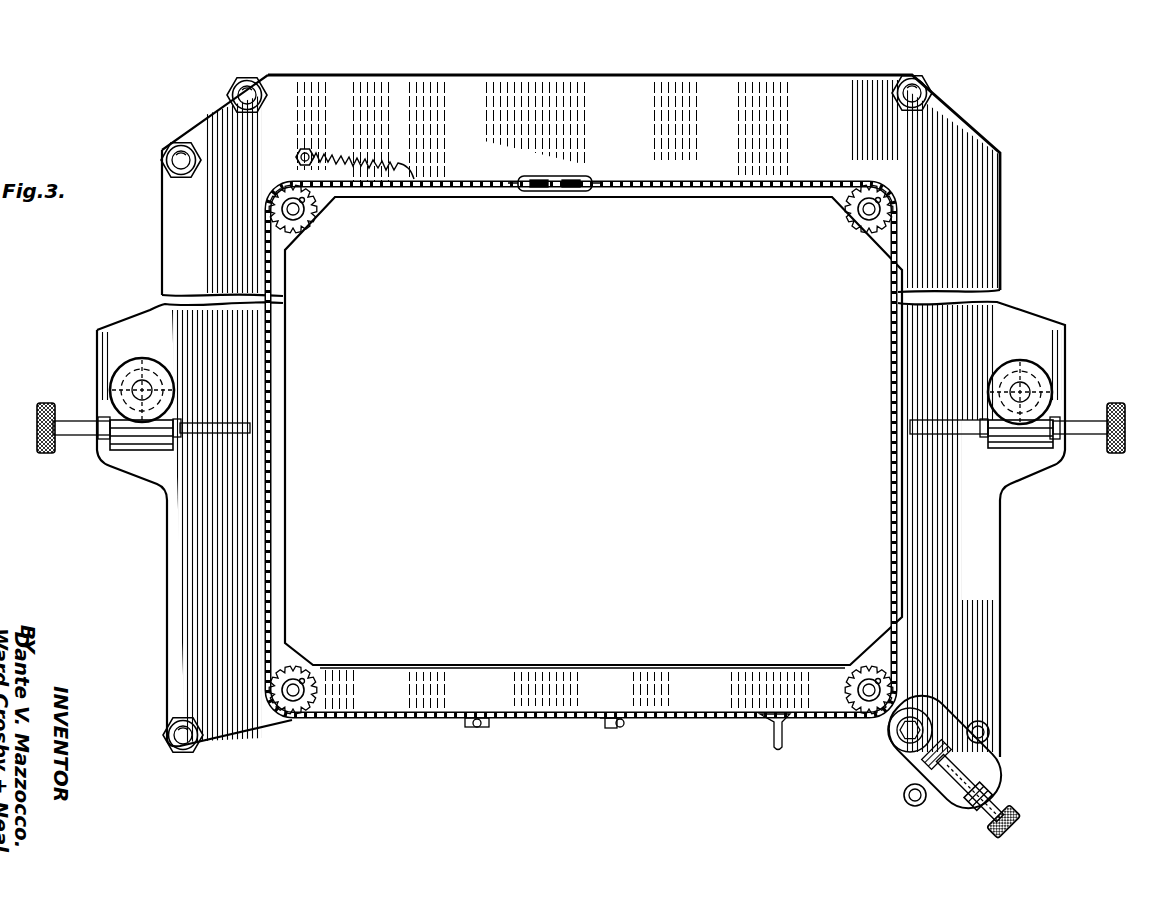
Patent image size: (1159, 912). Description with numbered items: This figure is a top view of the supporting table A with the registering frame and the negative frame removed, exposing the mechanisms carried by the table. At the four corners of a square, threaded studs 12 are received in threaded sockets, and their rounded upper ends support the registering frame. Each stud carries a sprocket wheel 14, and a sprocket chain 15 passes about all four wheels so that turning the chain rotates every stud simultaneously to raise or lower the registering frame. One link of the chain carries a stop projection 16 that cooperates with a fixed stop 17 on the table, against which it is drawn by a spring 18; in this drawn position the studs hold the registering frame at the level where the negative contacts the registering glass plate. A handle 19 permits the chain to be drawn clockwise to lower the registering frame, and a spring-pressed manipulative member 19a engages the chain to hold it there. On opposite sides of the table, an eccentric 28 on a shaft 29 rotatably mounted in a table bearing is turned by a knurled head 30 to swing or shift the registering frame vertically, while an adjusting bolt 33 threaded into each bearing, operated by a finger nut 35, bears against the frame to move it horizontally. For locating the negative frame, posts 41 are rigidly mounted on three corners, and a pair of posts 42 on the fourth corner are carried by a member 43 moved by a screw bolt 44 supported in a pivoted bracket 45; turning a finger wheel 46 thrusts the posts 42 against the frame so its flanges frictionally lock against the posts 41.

The supporting table A is at (175, 534).
The threaded studs 12 is at (295, 217).
The sprocket wheel 14 is at (304, 215).
The sprocket chain 15 is at (724, 720).
The stop projection 16 is at (608, 728).
The fixed stop 17 is at (624, 726).
The spring 18 is at (372, 162).
The handle 19 is at (782, 742).
The manipulative member 19a is at (477, 728).
The eccentric 28 is at (132, 360).
The shaft 29 is at (152, 392).
The knurled head 30 is at (163, 382).
The adjusting bolt 33 is at (82, 436).
The finger nut 35 is at (44, 452).
The posts 41 is at (181, 142).
The posts 42 is at (990, 730).
The member 43 is at (995, 750).
The screw bolt 44 is at (962, 798).
The bracket 45 is at (1000, 790).
The finger wheel 46 is at (1015, 812).